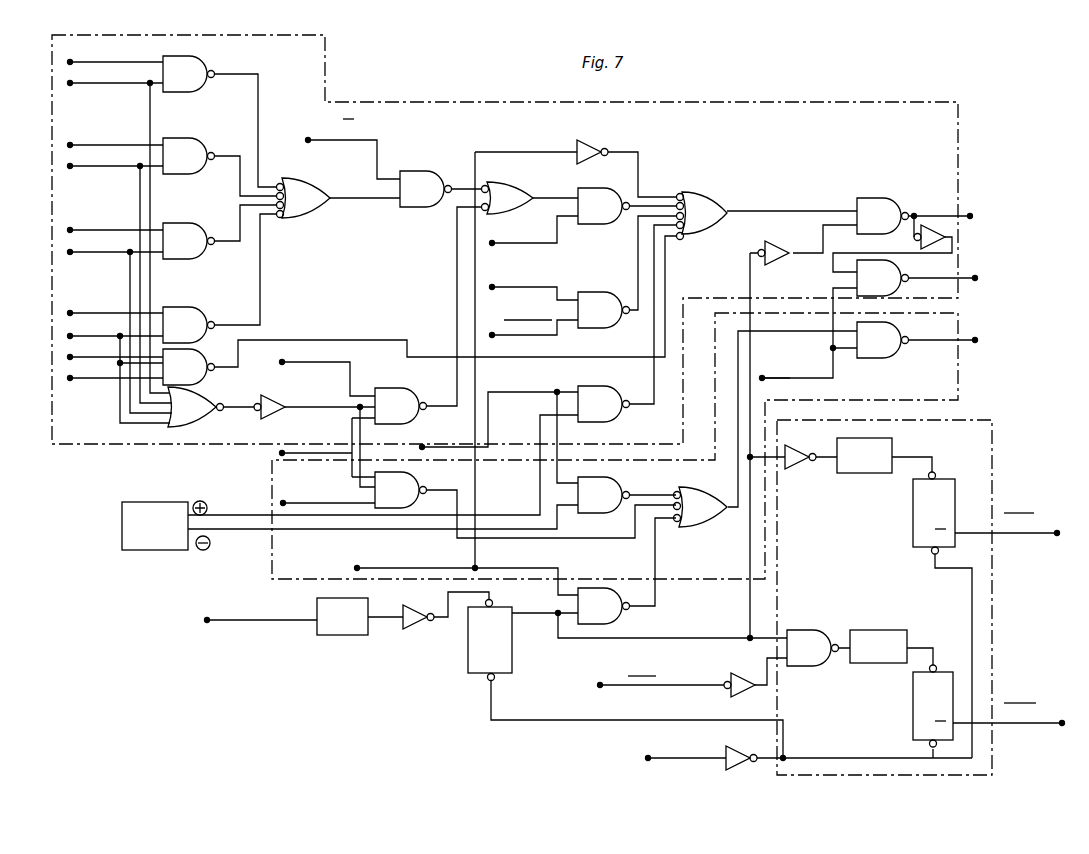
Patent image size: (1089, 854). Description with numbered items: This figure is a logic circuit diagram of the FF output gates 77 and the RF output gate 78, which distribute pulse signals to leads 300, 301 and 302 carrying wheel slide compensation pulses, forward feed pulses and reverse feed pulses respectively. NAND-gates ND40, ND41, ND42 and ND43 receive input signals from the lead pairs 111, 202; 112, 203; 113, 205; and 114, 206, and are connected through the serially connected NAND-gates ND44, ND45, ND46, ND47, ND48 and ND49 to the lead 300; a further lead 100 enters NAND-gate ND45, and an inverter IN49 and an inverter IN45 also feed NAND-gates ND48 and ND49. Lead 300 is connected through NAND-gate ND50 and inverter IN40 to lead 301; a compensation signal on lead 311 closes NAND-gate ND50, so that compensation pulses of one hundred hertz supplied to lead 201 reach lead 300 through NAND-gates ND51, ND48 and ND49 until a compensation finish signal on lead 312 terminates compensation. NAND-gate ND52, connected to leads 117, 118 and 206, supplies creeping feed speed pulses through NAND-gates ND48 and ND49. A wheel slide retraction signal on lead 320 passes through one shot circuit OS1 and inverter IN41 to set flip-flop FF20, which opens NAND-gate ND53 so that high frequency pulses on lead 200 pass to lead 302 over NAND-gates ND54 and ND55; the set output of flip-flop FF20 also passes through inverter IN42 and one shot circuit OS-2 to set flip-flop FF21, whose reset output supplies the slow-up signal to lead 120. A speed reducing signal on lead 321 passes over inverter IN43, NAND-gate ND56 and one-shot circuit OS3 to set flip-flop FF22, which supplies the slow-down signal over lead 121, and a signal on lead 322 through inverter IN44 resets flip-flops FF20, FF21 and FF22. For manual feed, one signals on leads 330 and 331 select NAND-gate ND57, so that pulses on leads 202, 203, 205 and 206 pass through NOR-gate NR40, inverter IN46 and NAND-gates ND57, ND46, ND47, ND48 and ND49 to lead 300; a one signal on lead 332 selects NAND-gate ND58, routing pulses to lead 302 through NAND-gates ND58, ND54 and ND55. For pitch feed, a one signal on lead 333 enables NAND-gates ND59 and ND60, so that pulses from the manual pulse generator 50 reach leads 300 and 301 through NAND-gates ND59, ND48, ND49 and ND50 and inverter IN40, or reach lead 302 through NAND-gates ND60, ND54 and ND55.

The lead 111 is at (70, 62).
The lead 202 is at (70, 83).
The lead 112 is at (70, 145).
The lead 203 is at (70, 166).
The lead 113 is at (70, 230).
The lead 205 is at (70, 252).
The lead 114 is at (70, 313).
The lead 206 is at (70, 336).
The lead 118 is at (75, 352).
The lead 117 is at (75, 373).
The S-bar line 100 is at (312, 134).
The lead 201 is at (492, 287).
The lead 312 is at (492, 335).
The lead 311 is at (759, 376).
The FF output gates 77 is at (958, 162).
The RF output gate 78 is at (960, 388).
The lead 300 is at (969, 215).
The lead 301 is at (974, 277).
The lead 302 is at (977, 340).
The lead 331 is at (290, 368).
The lead 330 is at (282, 453).
The lead 333 is at (422, 447).
The lead 332 is at (283, 503).
The manual pulse generator 50 is at (175, 501).
The lead 200 is at (357, 568).
The lead 320 is at (207, 620).
The lead 321 is at (600, 685).
The lead 322 is at (648, 758).
The lead 120 is at (1056, 531).
The lead 121 is at (1062, 723).
The NAND-gate ND40 is at (207, 57).
The NAND-gate ND41 is at (201, 139).
The NAND-gate ND42 is at (195, 222).
The NAND-gate ND43 is at (196, 306).
The NAND-gate ND44 is at (316, 178).
The NAND-gate ND45 is at (427, 169).
The NAND-gate ND46 is at (516, 182).
The NAND-gate ND47 is at (606, 179).
The NAND-gate ND48 is at (714, 192).
The NAND-gate ND49 is at (886, 198).
The NAND-gate ND50 is at (902, 276).
The NAND-gate ND51 is at (602, 292).
The NAND-gate ND52 is at (206, 349).
The NAND-gate ND53 is at (602, 598).
The NAND-gate ND54 is at (699, 488).
The NAND-gate ND55 is at (898, 330).
The NAND-gate ND56 is at (810, 628).
The NAND-gate ND57 is at (401, 389).
The NAND-gate ND58 is at (418, 481).
The NAND-gate ND59 is at (601, 386).
The NAND-gate ND60 is at (603, 478).
The NOR-gate NR40 is at (204, 397).
The inverter IN40 is at (939, 236).
The inverter IN41 is at (416, 600).
The inverter IN42 is at (797, 441).
The inverter IN43 is at (745, 668).
The inverter IN44 is at (742, 743).
The inverter IN45 is at (779, 244).
The inverter IN46 is at (285, 403).
The inverter IN49 is at (586, 140).
The one shot circuit OS1 is at (347, 598).
The one shot circuit OS-2 is at (876, 432).
The one-shot circuit OS3 is at (881, 628).
The flip-flop FF20 is at (502, 608).
The flip-flop FF21 is at (948, 477).
The flip-flop FF22 is at (941, 668).